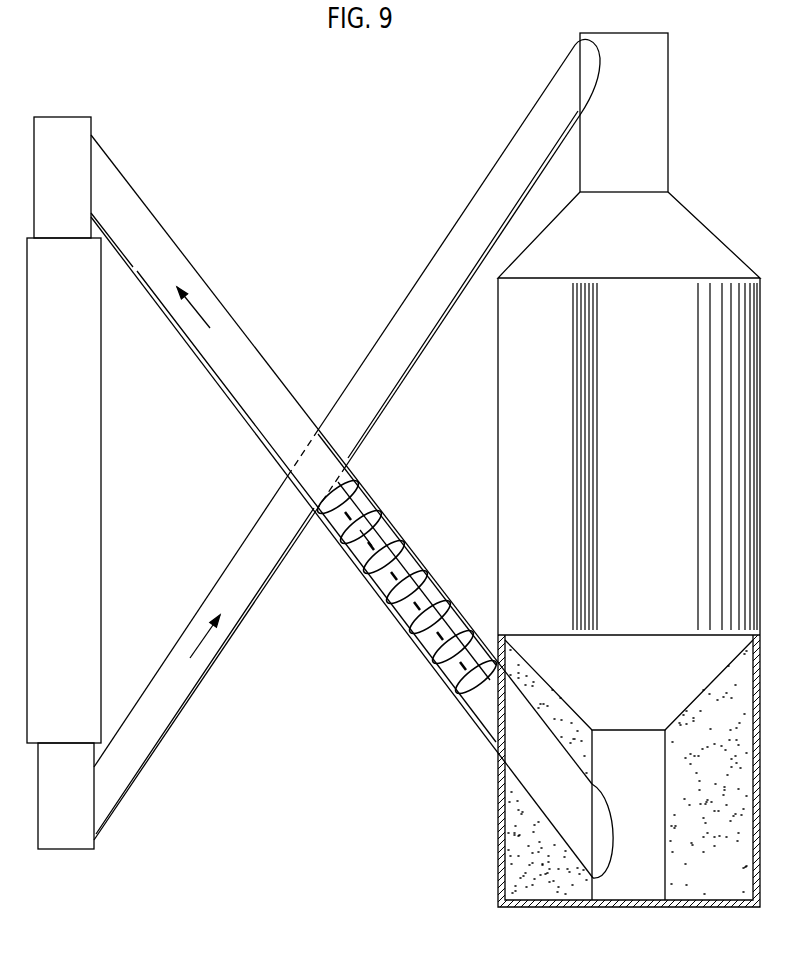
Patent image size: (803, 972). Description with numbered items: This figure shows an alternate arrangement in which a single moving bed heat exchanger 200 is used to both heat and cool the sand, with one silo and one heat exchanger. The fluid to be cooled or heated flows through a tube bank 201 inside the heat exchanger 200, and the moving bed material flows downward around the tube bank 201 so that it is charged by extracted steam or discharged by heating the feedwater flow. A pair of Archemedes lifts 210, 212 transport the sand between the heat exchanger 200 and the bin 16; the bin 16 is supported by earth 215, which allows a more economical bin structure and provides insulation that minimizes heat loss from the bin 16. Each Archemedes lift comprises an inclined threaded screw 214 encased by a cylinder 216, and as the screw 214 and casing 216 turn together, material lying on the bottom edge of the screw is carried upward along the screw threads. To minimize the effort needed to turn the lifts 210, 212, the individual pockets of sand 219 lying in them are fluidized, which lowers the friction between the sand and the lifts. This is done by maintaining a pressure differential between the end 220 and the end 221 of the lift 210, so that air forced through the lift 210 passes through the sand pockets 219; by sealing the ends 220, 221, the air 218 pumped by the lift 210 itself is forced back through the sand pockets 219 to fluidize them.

The bin 16 is at (518, 383).
The moving bed heat exchanger 200 is at (127, 532).
The tube bank 201 is at (87, 385).
The Archemedes lift 210 is at (220, 317).
The Archemedes lift 212 is at (482, 210).
The threaded screw 214 is at (357, 514).
The earth 215 is at (520, 836).
The cylinder 216 is at (462, 680).
The air 218 is at (340, 592).
The pockets of sand 219 is at (393, 540).
The end 220 is at (67, 133).
The end 221 is at (641, 885).